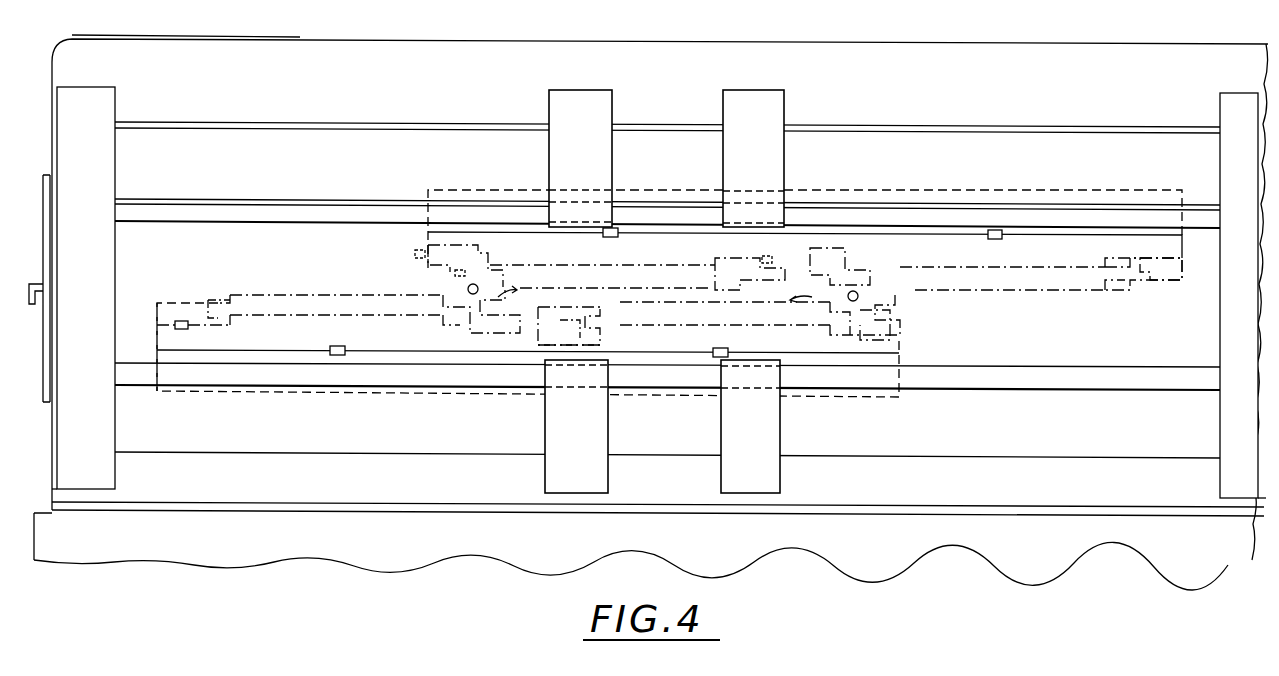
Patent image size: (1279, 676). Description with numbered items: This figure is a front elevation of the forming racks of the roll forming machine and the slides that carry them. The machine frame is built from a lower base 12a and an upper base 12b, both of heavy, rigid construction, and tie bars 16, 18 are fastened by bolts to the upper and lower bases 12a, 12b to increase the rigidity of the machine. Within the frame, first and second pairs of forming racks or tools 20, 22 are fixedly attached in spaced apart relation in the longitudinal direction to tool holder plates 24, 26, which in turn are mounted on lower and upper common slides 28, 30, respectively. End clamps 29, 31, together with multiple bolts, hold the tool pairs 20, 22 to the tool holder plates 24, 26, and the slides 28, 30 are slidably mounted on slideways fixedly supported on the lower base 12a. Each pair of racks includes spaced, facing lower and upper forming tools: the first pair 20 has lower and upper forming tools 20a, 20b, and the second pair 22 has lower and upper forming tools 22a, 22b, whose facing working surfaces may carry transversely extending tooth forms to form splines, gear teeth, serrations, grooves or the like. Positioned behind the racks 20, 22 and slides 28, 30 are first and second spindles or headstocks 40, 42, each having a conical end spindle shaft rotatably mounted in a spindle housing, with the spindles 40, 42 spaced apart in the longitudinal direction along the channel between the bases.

The lower base 12a is at (992, 553).
The upper base 12b is at (1152, 57).
The tie bar 16 is at (580, 97).
The tie bar 18 is at (757, 97).
The first pair of forming racks 20 is at (416, 285).
The lower forming tool 20a is at (328, 310).
The upper forming tool 20b is at (797, 276).
The second pair of forming racks 22 is at (907, 300).
The lower forming tool 22a is at (684, 320).
The upper forming tool 22b is at (998, 296).
The tool holder plate 24 is at (460, 238).
The tool holder plate 26 is at (808, 342).
The lower common slide 28 is at (183, 345).
The end clamp 29 is at (425, 243).
The upper common slide 30 is at (1128, 232).
The end clamp 31 is at (850, 245).
The first spindle 40 is at (477, 283).
The second spindle 42 is at (857, 290).